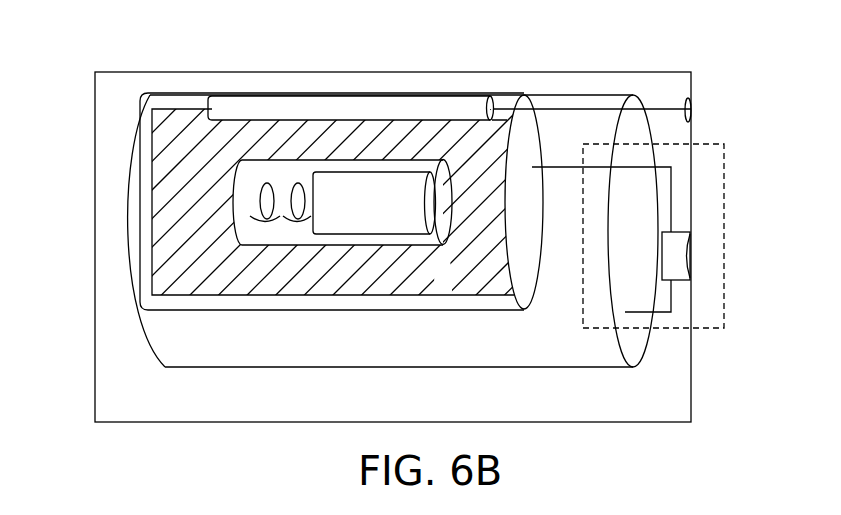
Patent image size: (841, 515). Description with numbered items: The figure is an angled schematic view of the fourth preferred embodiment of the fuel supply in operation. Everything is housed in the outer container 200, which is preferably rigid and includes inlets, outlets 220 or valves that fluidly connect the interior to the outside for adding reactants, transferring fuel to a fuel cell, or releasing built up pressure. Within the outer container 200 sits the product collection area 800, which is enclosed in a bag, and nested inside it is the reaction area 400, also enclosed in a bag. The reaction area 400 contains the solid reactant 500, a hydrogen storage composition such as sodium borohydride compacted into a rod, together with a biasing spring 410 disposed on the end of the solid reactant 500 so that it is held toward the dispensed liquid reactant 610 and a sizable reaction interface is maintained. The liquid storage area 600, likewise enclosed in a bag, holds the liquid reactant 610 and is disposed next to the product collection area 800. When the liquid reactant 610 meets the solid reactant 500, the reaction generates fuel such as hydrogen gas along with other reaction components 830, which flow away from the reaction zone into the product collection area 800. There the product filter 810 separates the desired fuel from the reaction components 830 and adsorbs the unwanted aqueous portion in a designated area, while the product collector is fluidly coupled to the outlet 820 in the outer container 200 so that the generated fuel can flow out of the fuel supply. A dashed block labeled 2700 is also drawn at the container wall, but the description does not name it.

The outer container 200 is at (620, 422).
The outlet 220 is at (692, 106).
The reaction area 400 is at (233, 237).
The spring 410 is at (250, 213).
The solid reactant 500 is at (390, 218).
The liquid storage area 600 is at (232, 368).
The liquid reactant 610 is at (437, 348).
The product collection area 800 is at (143, 187).
The product filter 810 is at (162, 150).
The outlet 820 is at (364, 107).
The reaction components 830 is at (385, 283).
The control circuit 2700 is at (724, 216).